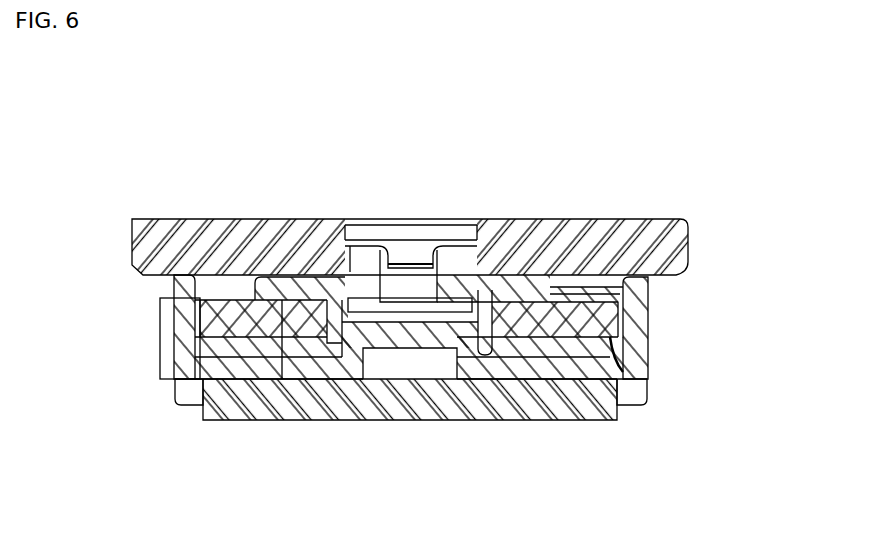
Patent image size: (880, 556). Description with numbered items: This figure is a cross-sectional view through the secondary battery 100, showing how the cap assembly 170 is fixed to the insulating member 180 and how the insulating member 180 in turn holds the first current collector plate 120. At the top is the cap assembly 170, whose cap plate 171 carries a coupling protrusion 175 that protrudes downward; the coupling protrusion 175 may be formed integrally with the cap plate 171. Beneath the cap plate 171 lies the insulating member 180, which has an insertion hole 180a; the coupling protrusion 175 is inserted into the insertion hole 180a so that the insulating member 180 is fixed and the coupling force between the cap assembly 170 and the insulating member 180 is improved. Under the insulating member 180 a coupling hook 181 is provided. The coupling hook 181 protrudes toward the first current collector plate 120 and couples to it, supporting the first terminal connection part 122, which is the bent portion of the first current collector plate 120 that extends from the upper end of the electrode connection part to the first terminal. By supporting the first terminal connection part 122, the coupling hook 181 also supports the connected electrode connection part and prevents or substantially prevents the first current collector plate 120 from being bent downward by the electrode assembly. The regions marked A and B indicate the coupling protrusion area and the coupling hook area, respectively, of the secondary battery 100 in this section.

The secondary battery 100 is at (77, 128).
The first current collector plate 120 is at (470, 428).
The first terminal connection part 122 is at (303, 338).
The cap assembly 170 is at (580, 214).
The cap plate 171 is at (416, 264).
The coupling protrusion 175 is at (379, 249).
The insulating member 180 is at (560, 287).
The insertion hole 180a is at (392, 297).
The coupling hook 181 is at (176, 349).
The detail region A is at (343, 231).
The detail region B is at (160, 323).